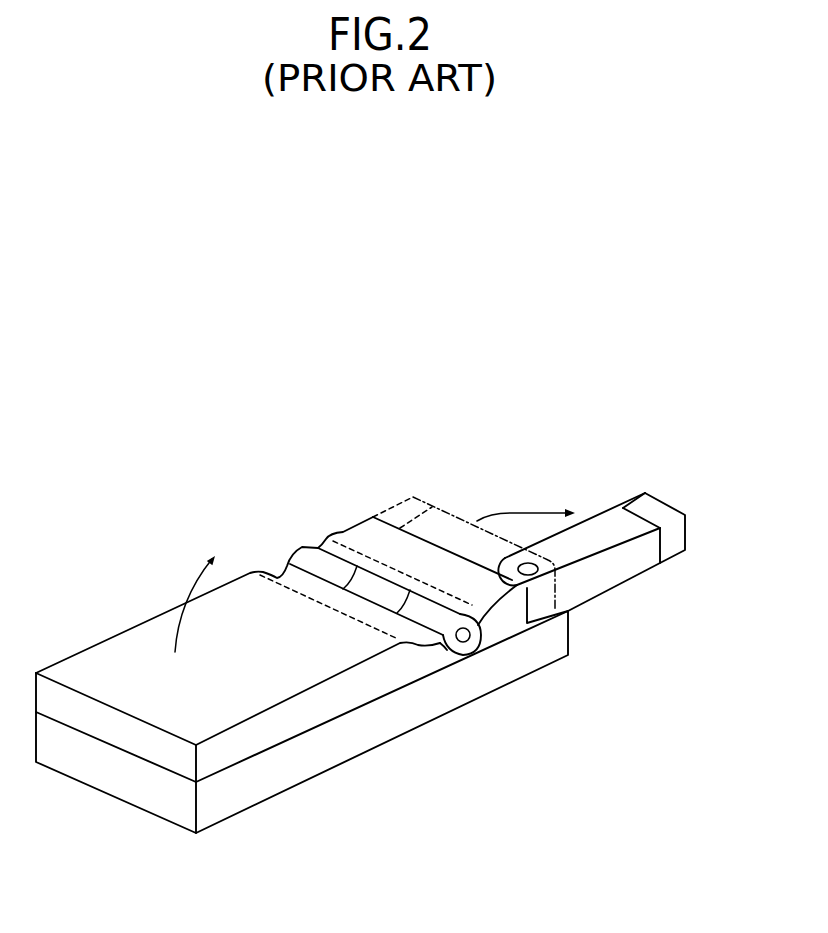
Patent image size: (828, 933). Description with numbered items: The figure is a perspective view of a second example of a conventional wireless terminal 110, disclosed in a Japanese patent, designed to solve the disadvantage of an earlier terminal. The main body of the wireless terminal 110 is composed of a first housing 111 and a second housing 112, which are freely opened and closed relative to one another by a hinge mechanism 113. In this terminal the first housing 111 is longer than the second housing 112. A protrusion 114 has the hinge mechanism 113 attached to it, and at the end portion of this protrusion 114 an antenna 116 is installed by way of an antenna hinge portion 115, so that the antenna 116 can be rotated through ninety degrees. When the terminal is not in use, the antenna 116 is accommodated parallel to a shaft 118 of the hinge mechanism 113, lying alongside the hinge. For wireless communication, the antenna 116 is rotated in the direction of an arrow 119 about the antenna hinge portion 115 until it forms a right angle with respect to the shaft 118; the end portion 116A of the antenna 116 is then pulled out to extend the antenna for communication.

The wireless terminal 110 is at (513, 730).
The first housing 111 is at (380, 750).
The second housing 112 is at (162, 616).
The hinge mechanism 113 is at (293, 553).
The protrusion 114 is at (345, 532).
The antenna hinge portion 115 is at (543, 605).
The antenna 116 is at (395, 505).
The end portion 116A is at (660, 508).
The shaft 118 is at (463, 643).
The arrow 119 is at (523, 510).